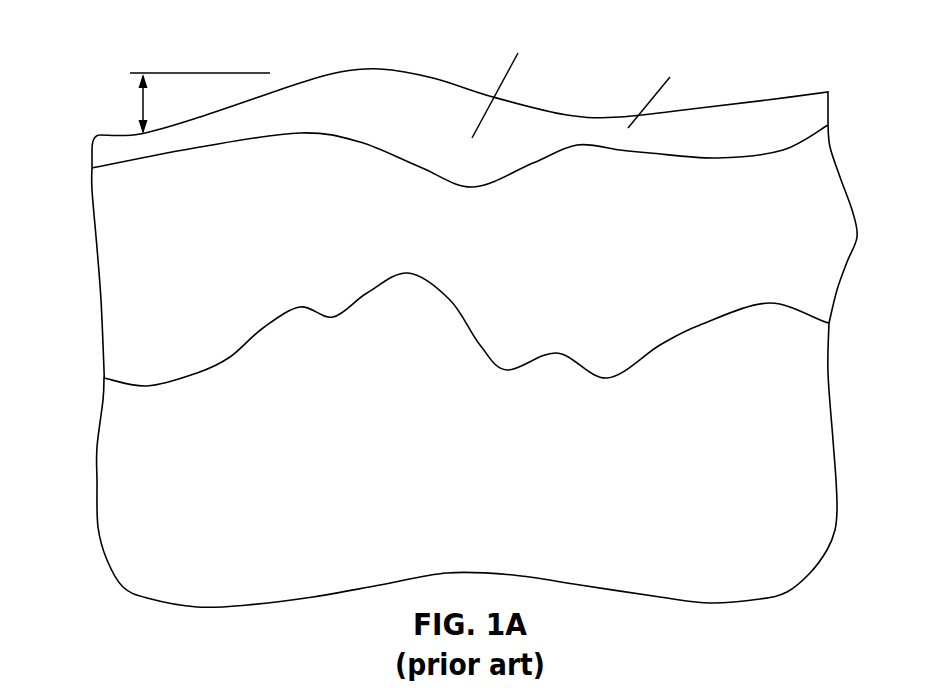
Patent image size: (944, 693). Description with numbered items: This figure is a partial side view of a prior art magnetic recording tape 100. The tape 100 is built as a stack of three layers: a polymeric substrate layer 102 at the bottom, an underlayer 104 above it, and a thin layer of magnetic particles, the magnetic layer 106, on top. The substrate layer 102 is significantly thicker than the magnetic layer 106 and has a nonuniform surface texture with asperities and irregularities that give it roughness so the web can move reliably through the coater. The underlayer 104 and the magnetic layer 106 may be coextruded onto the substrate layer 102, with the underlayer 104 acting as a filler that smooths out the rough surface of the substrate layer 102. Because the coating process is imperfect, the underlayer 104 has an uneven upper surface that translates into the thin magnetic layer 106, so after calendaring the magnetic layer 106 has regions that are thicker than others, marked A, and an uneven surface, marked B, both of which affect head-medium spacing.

The magnetic recording tape 100 is at (110, 78).
The substrate layer 102 is at (97, 447).
The underlayer 104 is at (97, 248).
The magnetic layer 106 is at (92, 150).